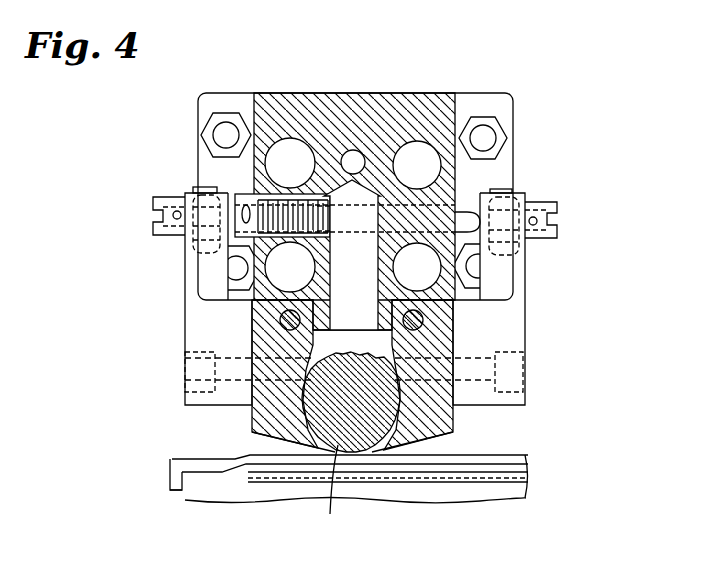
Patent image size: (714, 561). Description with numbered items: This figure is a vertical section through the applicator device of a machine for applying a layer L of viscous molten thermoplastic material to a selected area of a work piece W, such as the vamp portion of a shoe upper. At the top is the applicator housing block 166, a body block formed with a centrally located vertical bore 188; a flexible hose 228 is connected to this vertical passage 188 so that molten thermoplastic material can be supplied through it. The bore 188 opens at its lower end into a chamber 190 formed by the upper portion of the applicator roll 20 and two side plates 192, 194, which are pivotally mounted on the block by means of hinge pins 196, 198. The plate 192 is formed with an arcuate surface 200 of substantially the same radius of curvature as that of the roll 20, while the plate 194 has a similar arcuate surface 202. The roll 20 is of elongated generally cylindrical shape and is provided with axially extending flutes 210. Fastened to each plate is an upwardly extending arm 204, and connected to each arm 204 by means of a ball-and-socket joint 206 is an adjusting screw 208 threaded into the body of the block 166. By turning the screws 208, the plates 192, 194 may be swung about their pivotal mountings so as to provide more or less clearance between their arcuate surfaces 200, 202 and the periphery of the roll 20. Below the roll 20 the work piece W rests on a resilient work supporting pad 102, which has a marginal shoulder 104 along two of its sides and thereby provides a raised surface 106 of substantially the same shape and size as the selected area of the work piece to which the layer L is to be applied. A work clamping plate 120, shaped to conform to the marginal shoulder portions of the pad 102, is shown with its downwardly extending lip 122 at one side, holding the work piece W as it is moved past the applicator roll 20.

The applicator housing block 166 is at (447, 95).
The adjusting screw 208 is at (320, 166).
The ball-and-socket joint 206 is at (196, 186).
The upwardly extending arm 204 is at (185, 258).
The flexible hose 228 is at (250, 200).
The vertical bore 188 is at (330, 262).
The hinge pin 196 is at (284, 318).
The hinge pin 198 is at (430, 315).
The side plate 194 is at (455, 335).
The side plate 192 is at (256, 412).
The chamber 190 is at (378, 340).
The arcuate surface 200 is at (268, 433).
The arcuate surface 202 is at (442, 424).
The applicator roll 20 is at (362, 448).
The axially extending flutes 210 is at (321, 486).
The work clamping plate 120 is at (170, 459).
The downwardly extending lip 122 is at (178, 492).
The marginal shoulder 104 is at (222, 476).
The raised surface 106 is at (500, 460).
The layer L is at (462, 456).
The work piece W is at (586, 458).
The work supporting pad 102 is at (466, 505).